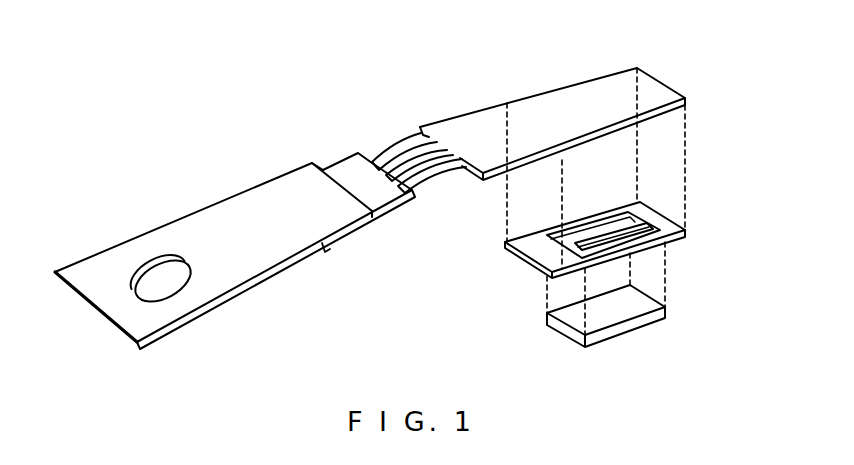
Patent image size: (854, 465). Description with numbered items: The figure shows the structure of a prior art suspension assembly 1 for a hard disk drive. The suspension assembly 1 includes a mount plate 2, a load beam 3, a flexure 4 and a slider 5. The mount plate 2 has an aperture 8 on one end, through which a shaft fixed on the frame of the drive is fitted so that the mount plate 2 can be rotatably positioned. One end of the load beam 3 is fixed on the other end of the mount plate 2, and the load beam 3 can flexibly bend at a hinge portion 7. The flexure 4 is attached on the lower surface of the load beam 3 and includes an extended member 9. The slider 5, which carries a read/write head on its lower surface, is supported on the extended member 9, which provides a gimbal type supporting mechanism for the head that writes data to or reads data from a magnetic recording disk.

The suspension assembly 1 is at (296, 91).
The mount plate 2 is at (193, 317).
The load beam 3 is at (488, 117).
The flexure 4 is at (685, 230).
The slider 5 is at (665, 307).
The hinge portion 7 is at (389, 140).
The aperture 8 is at (152, 258).
The extended member 9 is at (602, 235).